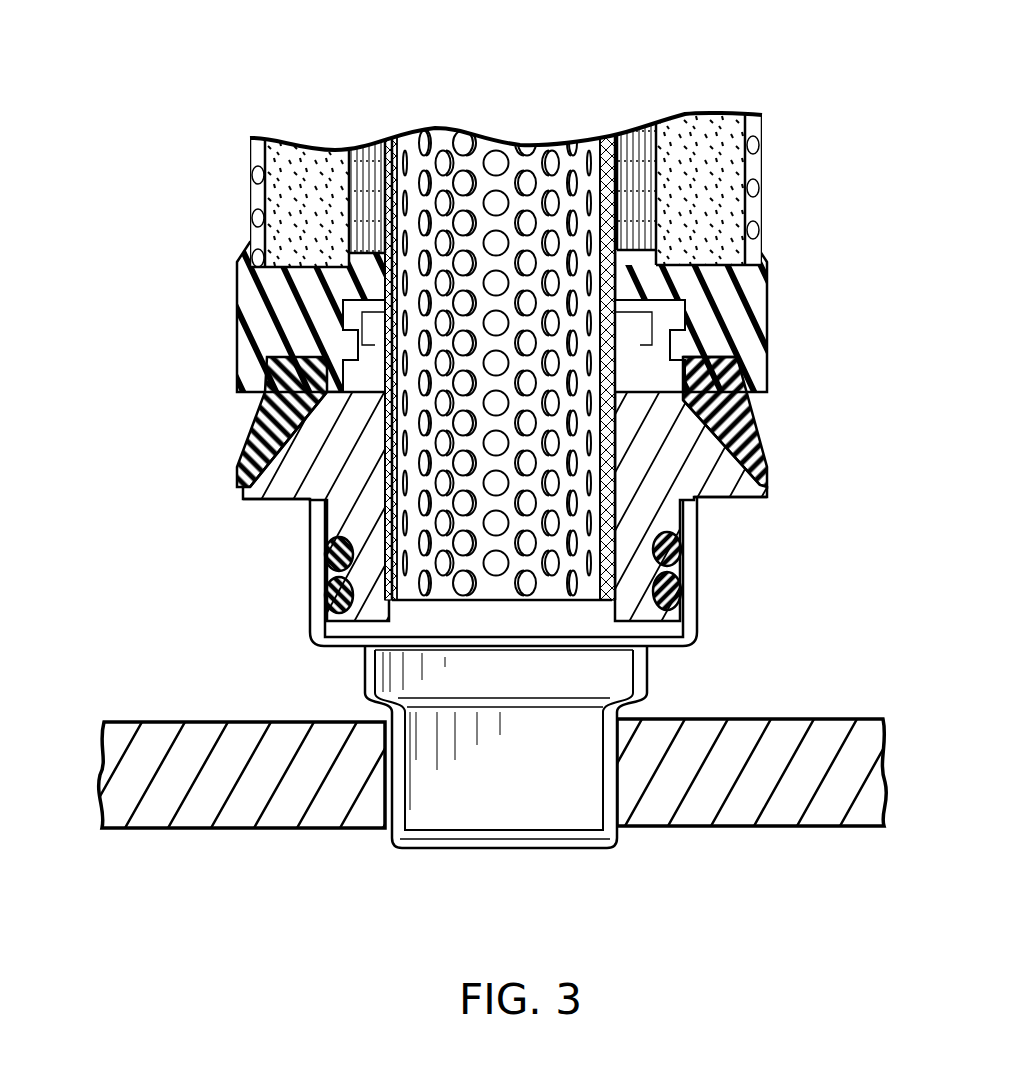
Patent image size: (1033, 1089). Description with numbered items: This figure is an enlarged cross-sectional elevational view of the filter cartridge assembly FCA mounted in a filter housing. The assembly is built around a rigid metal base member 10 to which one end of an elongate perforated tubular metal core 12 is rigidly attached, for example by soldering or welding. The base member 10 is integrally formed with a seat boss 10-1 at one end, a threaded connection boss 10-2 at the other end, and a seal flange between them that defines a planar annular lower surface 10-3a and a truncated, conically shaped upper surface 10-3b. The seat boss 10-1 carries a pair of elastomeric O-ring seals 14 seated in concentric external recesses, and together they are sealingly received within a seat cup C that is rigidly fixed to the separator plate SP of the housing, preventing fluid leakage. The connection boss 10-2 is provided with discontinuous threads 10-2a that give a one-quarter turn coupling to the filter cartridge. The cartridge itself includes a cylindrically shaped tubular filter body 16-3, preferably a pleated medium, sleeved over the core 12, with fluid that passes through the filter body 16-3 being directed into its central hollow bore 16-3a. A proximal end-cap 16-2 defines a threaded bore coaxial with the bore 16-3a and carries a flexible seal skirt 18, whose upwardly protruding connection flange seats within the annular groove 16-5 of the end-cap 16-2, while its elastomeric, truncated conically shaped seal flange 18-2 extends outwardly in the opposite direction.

The filter cartridge assembly FCA is at (524, 317).
The central hollow bore 16-3a is at (372, 142).
The tubular filter body 16-3 is at (327, 206).
The proximal end-cap 16-2 is at (317, 314).
The threaded connection boss 10-2 is at (718, 315).
The discontinuous threads 10-2a is at (345, 333).
The annular groove 16-5 is at (270, 386).
The seal flange 18-2 is at (735, 360).
The flexible seal skirt 18 is at (745, 392).
The planar annular lower surface 10-3a is at (273, 414).
The base member 10 is at (341, 477).
The perforated tubular metal core 12 is at (500, 444).
The truncated conically-shaped upper surface 10-3b is at (275, 502).
The O-ring seals 14 is at (325, 553).
The seat boss 10-1 is at (682, 565).
The seat cup C is at (350, 678).
The separator plate SP is at (743, 733).